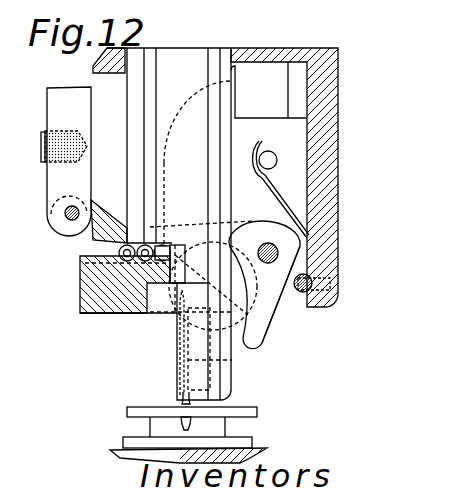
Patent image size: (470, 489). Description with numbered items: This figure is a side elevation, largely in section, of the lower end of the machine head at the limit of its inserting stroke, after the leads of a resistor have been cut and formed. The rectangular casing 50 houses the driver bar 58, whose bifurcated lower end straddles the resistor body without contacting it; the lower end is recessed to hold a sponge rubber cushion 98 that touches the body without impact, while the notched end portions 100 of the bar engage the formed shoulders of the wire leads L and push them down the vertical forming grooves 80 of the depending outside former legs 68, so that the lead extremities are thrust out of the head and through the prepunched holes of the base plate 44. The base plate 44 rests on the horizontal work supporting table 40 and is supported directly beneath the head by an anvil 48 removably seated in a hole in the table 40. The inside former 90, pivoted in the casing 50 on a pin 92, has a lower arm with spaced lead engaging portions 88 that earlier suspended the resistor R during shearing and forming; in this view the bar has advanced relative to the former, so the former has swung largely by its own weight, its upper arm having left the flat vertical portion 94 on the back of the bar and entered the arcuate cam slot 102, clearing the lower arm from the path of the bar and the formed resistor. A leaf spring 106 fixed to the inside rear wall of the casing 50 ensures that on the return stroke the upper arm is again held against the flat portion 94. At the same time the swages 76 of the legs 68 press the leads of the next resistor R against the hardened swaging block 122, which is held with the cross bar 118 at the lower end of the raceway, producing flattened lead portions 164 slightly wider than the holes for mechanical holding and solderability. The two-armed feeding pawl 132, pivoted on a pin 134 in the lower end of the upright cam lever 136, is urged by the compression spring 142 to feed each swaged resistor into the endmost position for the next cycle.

The work supporting table 40 is at (110, 452).
The base plate 44 is at (257, 408).
The anvil 48 is at (252, 443).
The casing 50 is at (281, 47).
The driver bar 58 is at (127, 137).
The outside former legs 68 is at (155, 79).
The swages 76 is at (176, 243).
The forming grooves 80 is at (180, 342).
The lead engaging portions 88 is at (262, 340).
The inside former 90 is at (280, 317).
The pin 92 is at (266, 243).
The flat vertical portion 94 is at (236, 340).
The sponge rubber cushion 98 is at (205, 364).
The notched end portions 100 is at (181, 399).
The cam slot 102 is at (166, 162).
The leaf spring 106 is at (280, 191).
The cross bar 118 is at (80, 293).
The swaging block 122 is at (108, 313).
The feeding pawl 132 is at (90, 239).
The pin 134 is at (65, 214).
The cam lever 136 is at (47, 184).
The compression spring 142 is at (43, 147).
The flattened lead portions 164 is at (180, 421).
The wire leads L is at (191, 425).
The resistor R is at (178, 250).